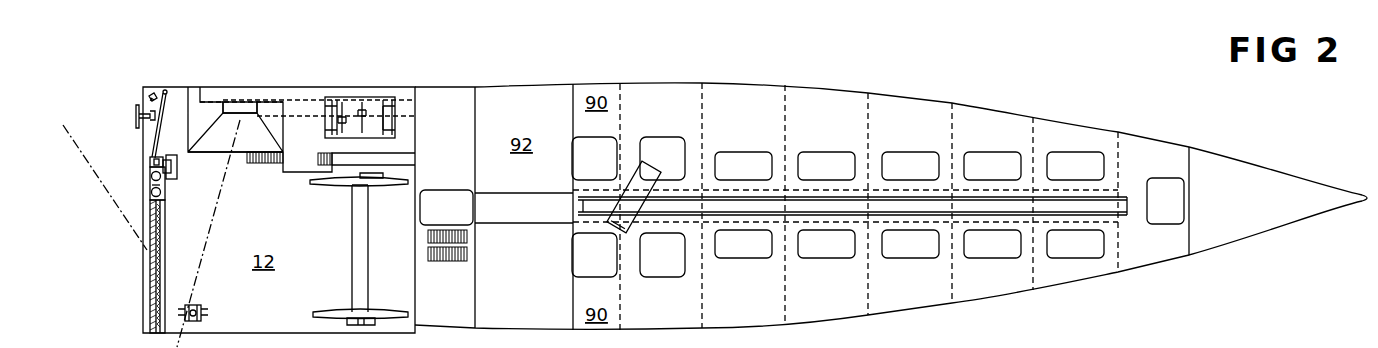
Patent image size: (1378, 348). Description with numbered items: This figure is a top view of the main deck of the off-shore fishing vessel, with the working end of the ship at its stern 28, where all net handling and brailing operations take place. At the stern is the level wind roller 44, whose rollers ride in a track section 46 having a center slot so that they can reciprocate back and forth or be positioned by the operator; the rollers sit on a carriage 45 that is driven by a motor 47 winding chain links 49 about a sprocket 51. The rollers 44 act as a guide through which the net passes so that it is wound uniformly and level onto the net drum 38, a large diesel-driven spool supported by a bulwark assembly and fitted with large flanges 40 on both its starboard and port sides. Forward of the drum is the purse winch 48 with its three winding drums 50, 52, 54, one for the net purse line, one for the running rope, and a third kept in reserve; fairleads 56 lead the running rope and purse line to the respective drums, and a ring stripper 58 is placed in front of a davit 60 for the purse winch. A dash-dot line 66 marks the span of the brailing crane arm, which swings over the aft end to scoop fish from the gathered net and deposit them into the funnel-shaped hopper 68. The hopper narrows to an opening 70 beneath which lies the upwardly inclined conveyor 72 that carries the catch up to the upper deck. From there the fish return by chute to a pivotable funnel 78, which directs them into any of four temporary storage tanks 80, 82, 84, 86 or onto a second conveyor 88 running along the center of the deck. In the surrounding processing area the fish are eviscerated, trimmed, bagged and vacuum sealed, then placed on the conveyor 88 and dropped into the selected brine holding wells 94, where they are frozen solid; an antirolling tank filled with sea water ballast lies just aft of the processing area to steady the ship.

The stern 28 is at (127, 257).
The net drum 38 is at (354, 249).
The flanges 40 is at (340, 185).
The level wind roller 44 is at (151, 192).
The carriage 45 is at (163, 182).
The track section 46 is at (157, 271).
The motor 47 is at (178, 168).
The purse winch 48 is at (362, 104).
The chain links 49 is at (158, 302).
The winding drum 50 is at (327, 116).
The sprocket 51 is at (150, 162).
The winding drum 52 is at (350, 108).
The winding drum 54 is at (368, 124).
The fairleads 56 is at (152, 92).
The ring stripper 58 is at (155, 133).
The davit 60 is at (136, 112).
The line 66 is at (200, 306).
The hopper 68 is at (250, 147).
The opening 70 is at (270, 108).
The conveyor 72 is at (302, 102).
The funnel 78 is at (648, 170).
The temporary storage tank 80 is at (597, 151).
The temporary storage tank 82 is at (672, 140).
The temporary storage tank 84 is at (592, 262).
The temporary storage tank 86 is at (655, 262).
The second conveyor 88 is at (718, 205).
The holding wells 94 is at (949, 205).